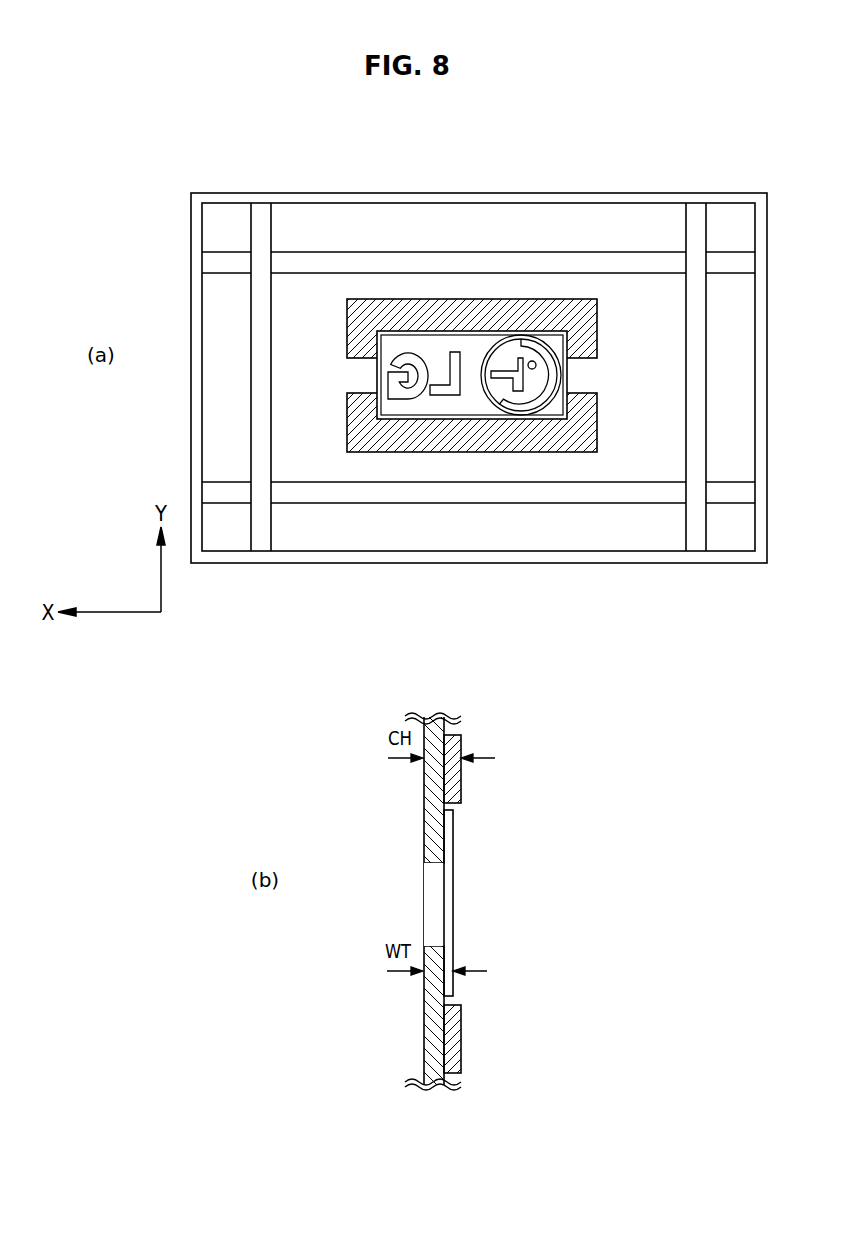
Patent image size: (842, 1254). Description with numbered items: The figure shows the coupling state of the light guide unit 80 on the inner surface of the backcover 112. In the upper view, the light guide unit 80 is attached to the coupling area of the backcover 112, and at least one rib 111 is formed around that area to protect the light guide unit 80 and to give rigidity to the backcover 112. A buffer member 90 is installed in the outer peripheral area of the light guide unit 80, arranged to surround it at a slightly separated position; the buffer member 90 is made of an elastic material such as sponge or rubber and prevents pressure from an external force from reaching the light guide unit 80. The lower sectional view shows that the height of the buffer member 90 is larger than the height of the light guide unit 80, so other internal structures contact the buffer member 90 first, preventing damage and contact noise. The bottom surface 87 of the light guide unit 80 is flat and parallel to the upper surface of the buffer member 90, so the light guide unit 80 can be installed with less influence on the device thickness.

The backcover 112 is at (212, 163).
The rib 111 is at (322, 263).
The light guide unit 80 is at (437, 345).
The buffer member 90 is at (590, 427).
The bottom surface 87 is at (447, 908).